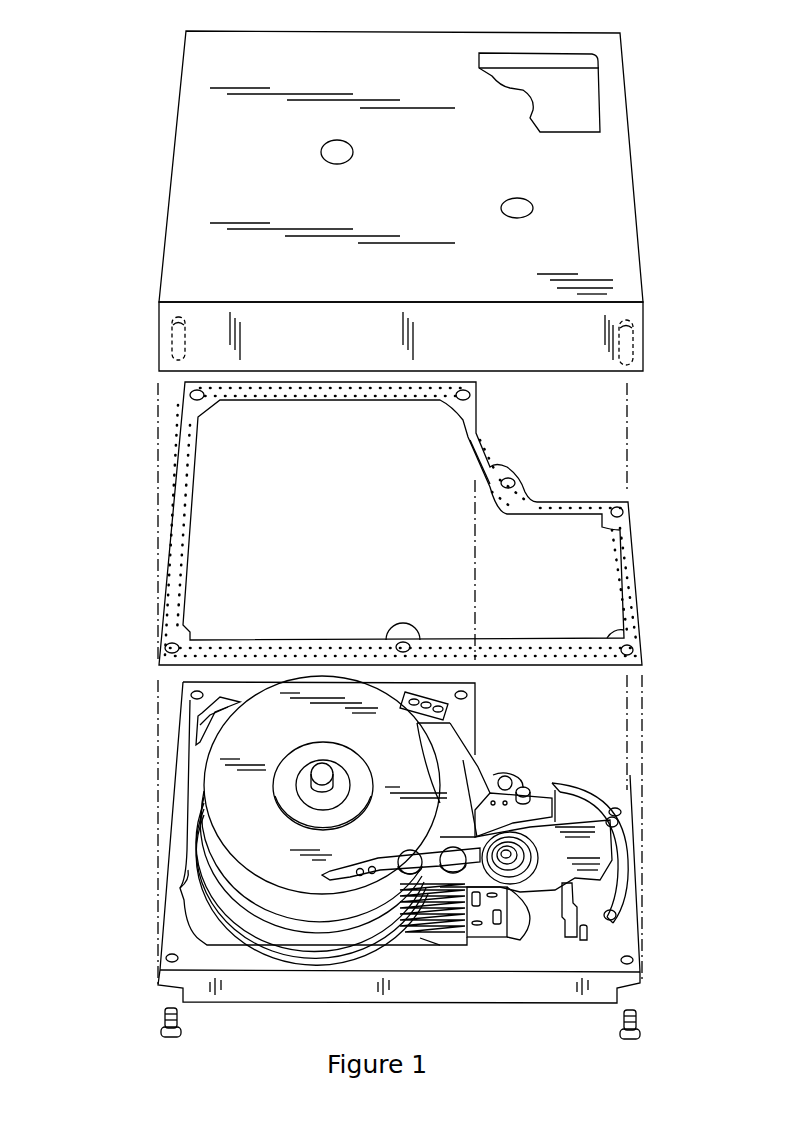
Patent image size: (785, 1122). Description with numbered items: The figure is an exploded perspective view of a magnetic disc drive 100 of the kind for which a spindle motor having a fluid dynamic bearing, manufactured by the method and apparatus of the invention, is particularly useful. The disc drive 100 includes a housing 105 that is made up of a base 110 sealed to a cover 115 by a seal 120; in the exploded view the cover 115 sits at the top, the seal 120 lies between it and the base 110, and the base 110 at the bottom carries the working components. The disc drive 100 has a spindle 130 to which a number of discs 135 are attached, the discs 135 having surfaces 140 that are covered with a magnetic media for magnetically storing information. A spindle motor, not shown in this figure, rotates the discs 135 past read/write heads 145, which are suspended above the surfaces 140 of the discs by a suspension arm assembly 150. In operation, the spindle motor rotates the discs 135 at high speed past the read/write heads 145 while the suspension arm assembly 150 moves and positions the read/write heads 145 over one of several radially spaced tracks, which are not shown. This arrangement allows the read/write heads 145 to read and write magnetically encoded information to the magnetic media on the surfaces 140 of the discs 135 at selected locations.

The disc drive 100 is at (130, 82).
The housing 105 is at (642, 100).
The cover 115 is at (637, 176).
The seal 120 is at (637, 580).
The base 110 is at (635, 885).
The discs 135 is at (207, 755).
The surfaces 140 is at (277, 848).
The spindle 130 is at (303, 792).
The read/write heads 145 is at (327, 876).
The suspension arm assembly 150 is at (420, 938).